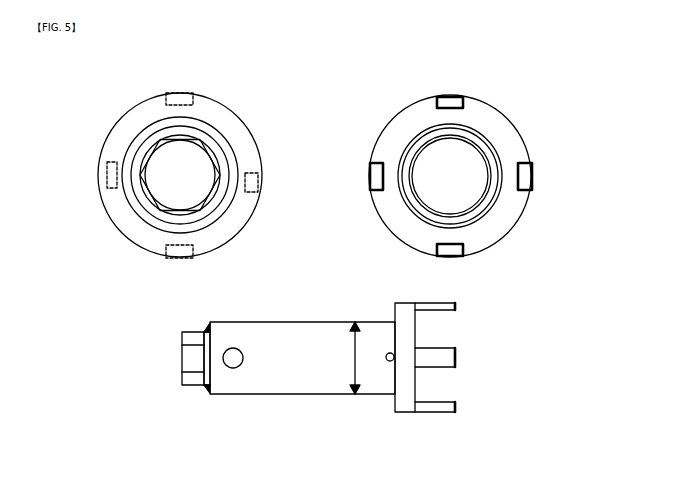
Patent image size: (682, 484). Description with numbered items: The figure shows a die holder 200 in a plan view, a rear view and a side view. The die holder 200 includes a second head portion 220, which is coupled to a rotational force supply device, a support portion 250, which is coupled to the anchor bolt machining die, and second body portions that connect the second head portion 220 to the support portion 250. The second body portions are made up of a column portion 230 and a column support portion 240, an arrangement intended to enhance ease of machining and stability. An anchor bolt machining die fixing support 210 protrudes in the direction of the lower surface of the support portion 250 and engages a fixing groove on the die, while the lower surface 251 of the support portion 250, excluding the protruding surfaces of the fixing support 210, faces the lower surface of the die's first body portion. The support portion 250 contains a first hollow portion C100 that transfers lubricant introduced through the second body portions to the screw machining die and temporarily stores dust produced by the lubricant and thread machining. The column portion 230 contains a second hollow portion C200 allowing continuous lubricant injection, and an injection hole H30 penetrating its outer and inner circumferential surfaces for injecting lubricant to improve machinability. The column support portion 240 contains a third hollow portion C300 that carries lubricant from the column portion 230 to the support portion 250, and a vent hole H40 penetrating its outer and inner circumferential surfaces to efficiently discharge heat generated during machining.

The die holder 200 is at (50, 119).
The anchor bolt machining die fixing support 210 is at (257, 182).
The second head portion 220 is at (233, 162).
The column portion 230 is at (128, 198).
The column support portion 240 is at (137, 217).
The support portion 250 is at (230, 132).
The lower surface 251 is at (512, 133).
The injection hole H30 is at (400, 195).
The vent hole H40 is at (377, 188).
The first hollow portion C100 is at (277, 372).
The second hollow portion C200 is at (418, 398).
The third hollow portion C300 is at (402, 380).